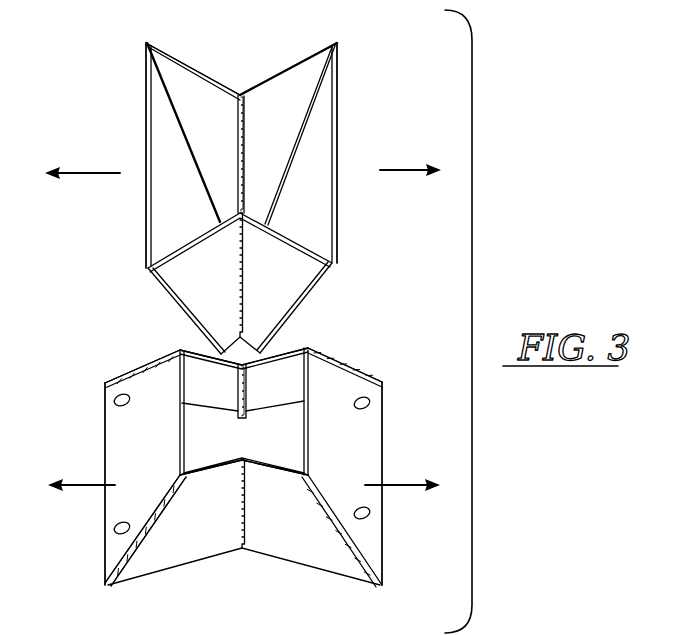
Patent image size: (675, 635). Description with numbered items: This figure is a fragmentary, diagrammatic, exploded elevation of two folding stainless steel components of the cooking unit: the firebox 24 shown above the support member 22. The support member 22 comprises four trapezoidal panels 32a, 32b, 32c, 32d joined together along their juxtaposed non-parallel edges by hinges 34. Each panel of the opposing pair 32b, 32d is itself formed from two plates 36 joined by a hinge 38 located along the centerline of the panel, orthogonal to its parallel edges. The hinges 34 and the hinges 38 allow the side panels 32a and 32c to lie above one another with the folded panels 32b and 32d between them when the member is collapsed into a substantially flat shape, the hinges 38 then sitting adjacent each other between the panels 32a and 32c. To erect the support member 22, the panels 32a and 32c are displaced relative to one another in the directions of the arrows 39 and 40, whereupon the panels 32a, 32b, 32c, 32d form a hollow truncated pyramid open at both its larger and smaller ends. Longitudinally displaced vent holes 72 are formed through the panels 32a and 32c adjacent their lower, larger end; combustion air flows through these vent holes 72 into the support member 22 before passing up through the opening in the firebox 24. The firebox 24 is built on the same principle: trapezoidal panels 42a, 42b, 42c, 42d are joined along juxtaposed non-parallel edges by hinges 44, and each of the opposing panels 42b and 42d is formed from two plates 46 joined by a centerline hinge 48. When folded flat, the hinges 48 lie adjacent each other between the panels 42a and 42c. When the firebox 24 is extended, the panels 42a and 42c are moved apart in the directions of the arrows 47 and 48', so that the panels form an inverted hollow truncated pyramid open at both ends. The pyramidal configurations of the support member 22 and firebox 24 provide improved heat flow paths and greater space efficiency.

The support member 22 is at (98, 557).
The firebox 24 is at (341, 128).
The panel 32a is at (112, 462).
The panel 32b is at (283, 366).
The panel 32c is at (370, 462).
The panel 32d is at (163, 563).
The hinge 34 is at (115, 380).
The plate 36 is at (212, 398).
The hinge 38 is at (236, 400).
The arrow 39 is at (80, 487).
The arrow 40 is at (408, 488).
The panel 42a is at (160, 150).
The panel 42b is at (218, 78).
The panel 42c is at (325, 218).
The panel 42d is at (208, 318).
The hinge 44 is at (147, 45).
The plate 46 is at (181, 80).
The arrow 47 is at (78, 174).
The hinge 48 is at (266, 216).
The arrow 48' is at (417, 155).
The vent hole 72 is at (114, 401).